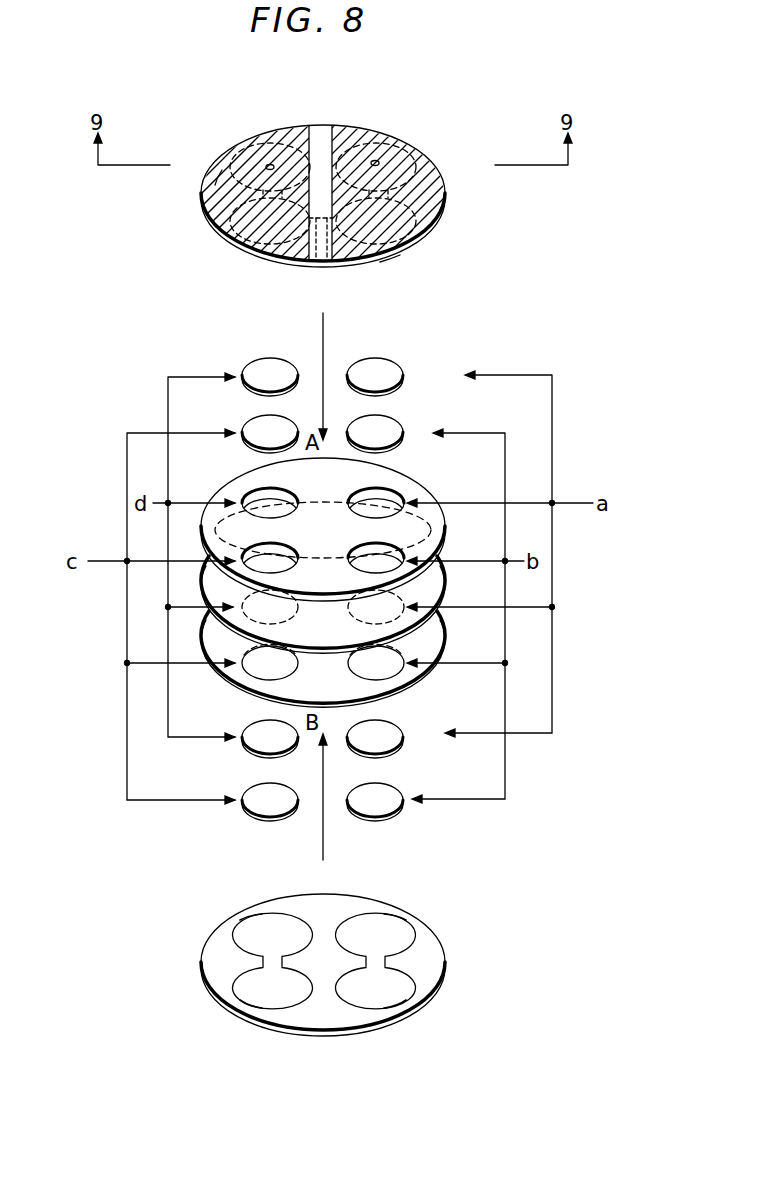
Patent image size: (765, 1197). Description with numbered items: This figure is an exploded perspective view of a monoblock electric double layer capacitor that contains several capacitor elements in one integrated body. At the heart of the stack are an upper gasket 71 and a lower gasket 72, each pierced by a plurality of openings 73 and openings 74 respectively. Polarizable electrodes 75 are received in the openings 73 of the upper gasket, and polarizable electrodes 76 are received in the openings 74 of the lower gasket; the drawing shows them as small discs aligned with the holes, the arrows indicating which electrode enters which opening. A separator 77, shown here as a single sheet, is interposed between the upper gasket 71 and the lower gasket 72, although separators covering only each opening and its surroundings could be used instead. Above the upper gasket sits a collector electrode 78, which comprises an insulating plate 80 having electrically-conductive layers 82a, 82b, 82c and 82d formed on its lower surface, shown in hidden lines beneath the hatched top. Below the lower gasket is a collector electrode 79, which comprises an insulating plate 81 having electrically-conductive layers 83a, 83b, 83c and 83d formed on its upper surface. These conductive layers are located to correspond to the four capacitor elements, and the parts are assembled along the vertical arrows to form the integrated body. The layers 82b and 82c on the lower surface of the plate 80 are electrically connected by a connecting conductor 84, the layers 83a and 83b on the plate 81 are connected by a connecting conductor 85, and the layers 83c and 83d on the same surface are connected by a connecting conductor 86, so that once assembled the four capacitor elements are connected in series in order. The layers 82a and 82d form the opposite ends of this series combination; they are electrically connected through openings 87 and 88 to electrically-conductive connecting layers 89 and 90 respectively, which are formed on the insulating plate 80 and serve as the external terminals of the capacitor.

The upper gasket 71 is at (446, 534).
The lower gasket 72 is at (444, 636).
The openings 73 is at (400, 497).
The openings 74 is at (400, 668).
The polarizable electrodes 75 is at (405, 372).
The polarizable electrodes 76 is at (403, 741).
The separator 77 is at (444, 586).
The collector electrode 78 is at (446, 188).
The collector electrode 79 is at (446, 966).
The insulating plate 80 is at (447, 205).
The insulating plate 81 is at (425, 983).
The electrically-conductive layer 82a is at (412, 150).
The electrically-conductive layer 82b is at (420, 232).
The electrically-conductive layer 82c is at (235, 238).
The electrically-conductive layer 82d is at (240, 150).
The electrically-conductive layer 83a is at (406, 924).
The electrically-conductive layer 83b is at (398, 1006).
The electrically-conductive layer 83c is at (235, 990).
The electrically-conductive layer 83d is at (252, 924).
The connecting conductor 84 is at (318, 268).
The connecting conductor 85 is at (388, 963).
The connecting conductor 86 is at (262, 960).
The opening 87 is at (376, 160).
The opening 88 is at (270, 164).
The electrically-conductive connecting layer 89 is at (396, 257).
The electrically-conductive connecting layer 90 is at (212, 195).